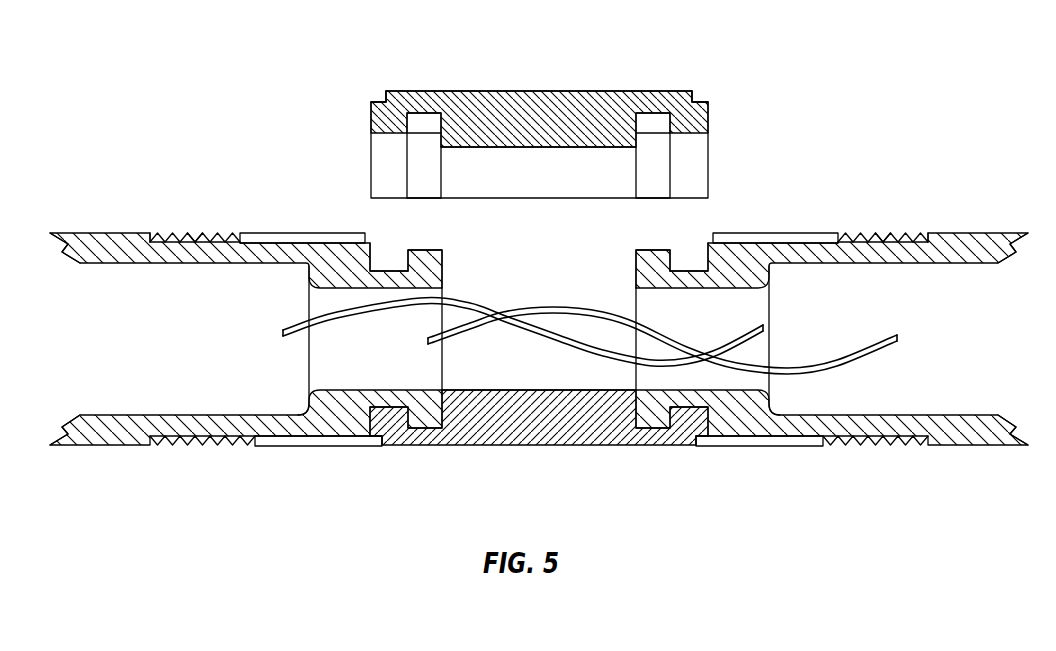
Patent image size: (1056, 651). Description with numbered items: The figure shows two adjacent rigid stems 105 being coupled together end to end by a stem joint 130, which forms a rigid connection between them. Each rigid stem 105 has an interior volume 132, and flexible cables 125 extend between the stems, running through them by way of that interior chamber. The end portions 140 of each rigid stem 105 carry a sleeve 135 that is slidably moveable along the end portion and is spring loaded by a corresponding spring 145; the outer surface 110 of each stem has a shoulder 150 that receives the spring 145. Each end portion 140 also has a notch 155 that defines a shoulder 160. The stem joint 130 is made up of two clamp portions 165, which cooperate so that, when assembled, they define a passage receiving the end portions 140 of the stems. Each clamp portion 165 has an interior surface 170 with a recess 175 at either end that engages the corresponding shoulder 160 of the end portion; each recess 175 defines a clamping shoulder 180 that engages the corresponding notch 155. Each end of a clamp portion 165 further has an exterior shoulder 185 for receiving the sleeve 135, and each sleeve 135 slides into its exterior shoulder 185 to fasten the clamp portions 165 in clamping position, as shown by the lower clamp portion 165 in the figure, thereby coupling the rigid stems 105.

The rigid stem 105 is at (109, 232).
The outer surface 110 is at (73, 232).
The flexible cables 125 is at (555, 345).
The stem joint 130 is at (548, 58).
The interior volume 132 is at (157, 362).
The sleeve 135 is at (312, 232).
The end portion 140 is at (222, 226).
The spring 145 is at (197, 233).
The shoulder 150 is at (152, 233).
The notch 155 is at (382, 270).
The shoulder 160 is at (436, 250).
The clamp portion 165 is at (484, 93).
The interior surface 170 is at (533, 186).
The recess 175 is at (420, 120).
The clamping shoulder 180 is at (408, 156).
The exterior shoulder 185 is at (383, 100).